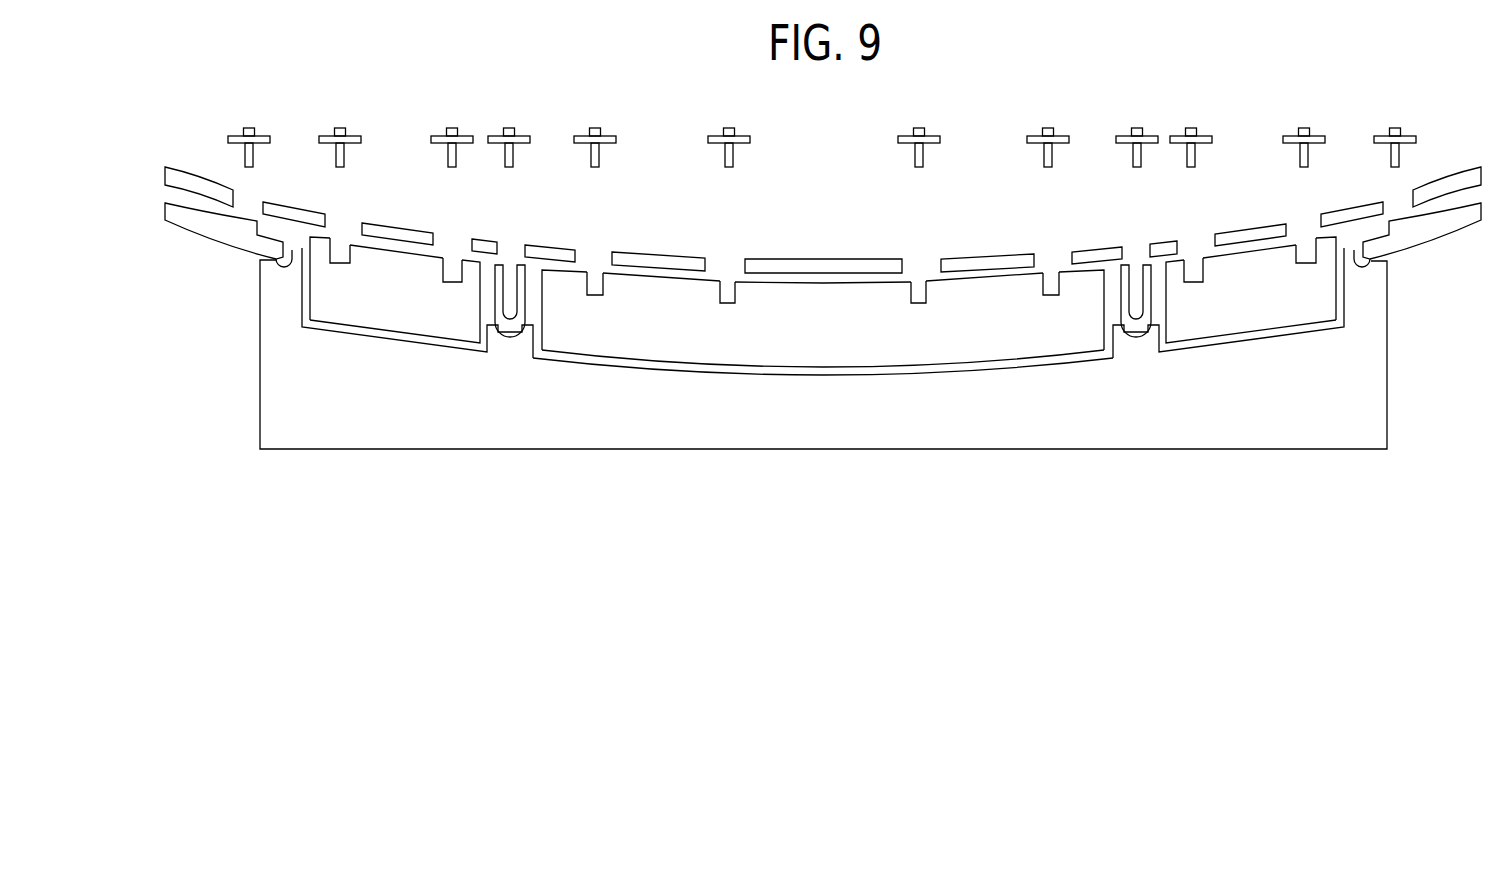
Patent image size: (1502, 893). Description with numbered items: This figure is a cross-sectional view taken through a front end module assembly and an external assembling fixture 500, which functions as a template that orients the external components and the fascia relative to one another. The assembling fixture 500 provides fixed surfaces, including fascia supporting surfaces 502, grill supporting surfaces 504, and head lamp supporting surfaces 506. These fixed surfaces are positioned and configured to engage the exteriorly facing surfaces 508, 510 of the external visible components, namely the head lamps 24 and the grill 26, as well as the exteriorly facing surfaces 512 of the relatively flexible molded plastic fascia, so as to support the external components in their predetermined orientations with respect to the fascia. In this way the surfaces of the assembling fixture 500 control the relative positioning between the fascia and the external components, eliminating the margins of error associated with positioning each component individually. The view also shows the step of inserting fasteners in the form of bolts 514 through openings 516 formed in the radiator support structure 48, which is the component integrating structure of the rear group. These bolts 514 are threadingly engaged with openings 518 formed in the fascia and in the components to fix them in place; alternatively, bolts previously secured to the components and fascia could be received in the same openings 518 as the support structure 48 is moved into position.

The head lamps 24 is at (409, 270).
The grill 26 is at (785, 297).
The radiator support structure 48 is at (993, 262).
The external assembling fixture 500 is at (863, 445).
The fascia supporting surfaces 502 is at (258, 255).
The grill supporting surfaces 504 is at (778, 370).
The head lamp supporting surfaces 506 is at (352, 330).
The exteriorly facing surfaces 508 is at (434, 345).
The exteriorly facing surfaces 510 is at (645, 362).
The exteriorly facing surfaces of the fascia 512 is at (293, 253).
The bolts 514 is at (725, 157).
The openings 516 is at (710, 262).
The openings 518 is at (350, 253).